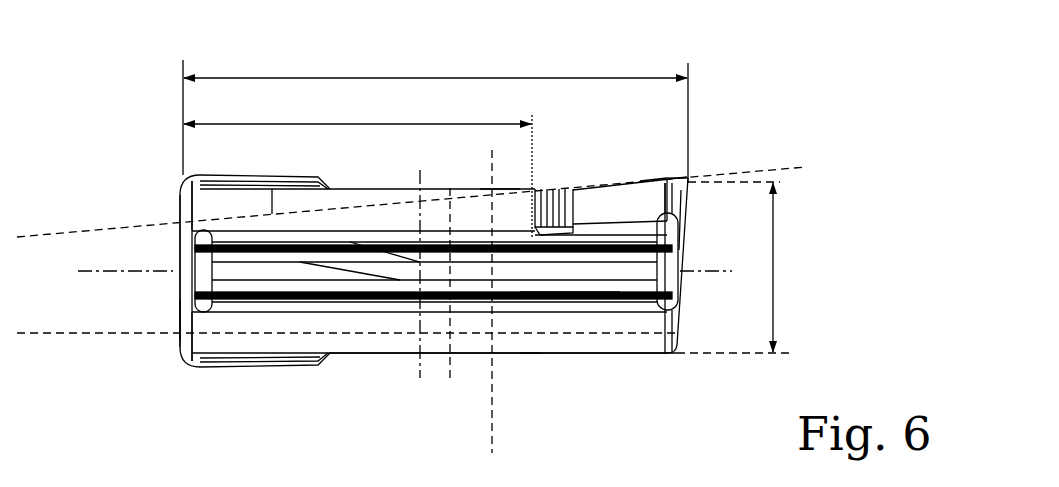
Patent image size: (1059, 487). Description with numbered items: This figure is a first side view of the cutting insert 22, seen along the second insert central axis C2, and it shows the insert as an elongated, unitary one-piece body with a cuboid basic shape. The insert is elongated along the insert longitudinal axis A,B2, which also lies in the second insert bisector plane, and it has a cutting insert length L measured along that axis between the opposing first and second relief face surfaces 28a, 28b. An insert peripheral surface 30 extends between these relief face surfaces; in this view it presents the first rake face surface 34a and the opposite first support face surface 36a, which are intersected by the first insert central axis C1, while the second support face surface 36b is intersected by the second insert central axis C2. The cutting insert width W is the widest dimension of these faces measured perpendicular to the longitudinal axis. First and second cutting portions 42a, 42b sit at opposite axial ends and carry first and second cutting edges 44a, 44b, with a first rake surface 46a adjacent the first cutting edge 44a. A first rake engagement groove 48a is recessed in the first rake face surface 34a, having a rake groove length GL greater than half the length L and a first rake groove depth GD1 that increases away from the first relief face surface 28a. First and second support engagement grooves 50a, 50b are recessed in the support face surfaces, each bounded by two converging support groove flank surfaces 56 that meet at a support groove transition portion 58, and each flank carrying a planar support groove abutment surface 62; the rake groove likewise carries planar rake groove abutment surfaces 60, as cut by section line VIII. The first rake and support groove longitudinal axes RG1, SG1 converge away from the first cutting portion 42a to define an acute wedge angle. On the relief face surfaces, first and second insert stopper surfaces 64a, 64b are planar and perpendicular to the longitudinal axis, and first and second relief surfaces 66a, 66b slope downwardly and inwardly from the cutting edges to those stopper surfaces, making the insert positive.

The cutting insert 22 is at (743, 113).
The first relief face surface 28a is at (696, 240).
The second relief face surface 28b is at (173, 311).
The insert peripheral surface 30 is at (632, 340).
The first rake face surface 34a is at (557, 183).
The first support face surface 36a is at (365, 358).
The second support face surface 36b is at (630, 200).
The first cutting portion 42a is at (783, 140).
The second cutting portion 42b is at (132, 85).
The first cutting edge 44a is at (692, 181).
The second cutting edge 44b is at (182, 242).
The first rake surface 46a is at (643, 170).
The first rake engagement groove 48a is at (316, 197).
The first support engagement groove 50a is at (255, 346).
The second support engagement groove 50b is at (573, 288).
The support groove flank surface 56 is at (377, 262).
The support groove transition portion 58 is at (333, 273).
The rake groove abutment surface 60 is at (496, 193).
The support groove abutment surface 62 is at (545, 338).
The first insert stopper surface 64a is at (678, 322).
The second insert stopper surface 64b is at (183, 238).
The first relief surface 66a is at (688, 217).
The second relief surface 66b is at (183, 310).
The cutting insert length L is at (247, 77).
The rake groove length GL is at (347, 127).
The cutting insert width W is at (775, 283).
The first rake groove depth GD1 is at (270, 197).
The first rake groove longitudinal axis RG1 is at (143, 222).
The first support groove longitudinal axis SG1 is at (90, 336).
The insert longitudinal axis and second insert bisector plane A,B2 is at (92, 274).
The first insert central axis C1 is at (447, 298).
The second insert central axis C2 is at (450, 272).
The section line VIII is at (491, 170).